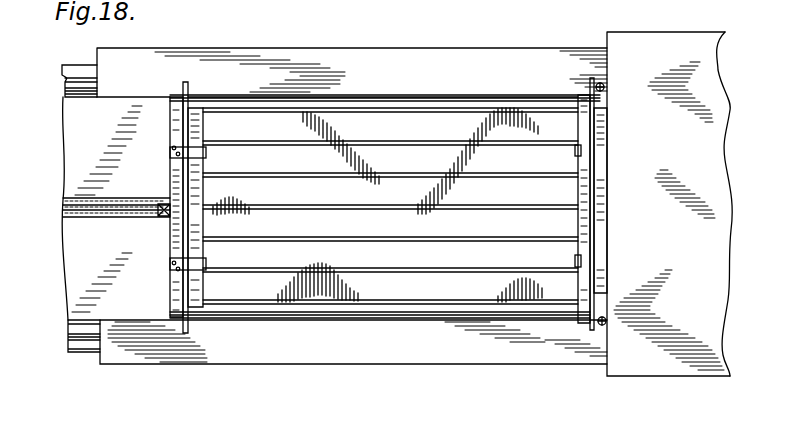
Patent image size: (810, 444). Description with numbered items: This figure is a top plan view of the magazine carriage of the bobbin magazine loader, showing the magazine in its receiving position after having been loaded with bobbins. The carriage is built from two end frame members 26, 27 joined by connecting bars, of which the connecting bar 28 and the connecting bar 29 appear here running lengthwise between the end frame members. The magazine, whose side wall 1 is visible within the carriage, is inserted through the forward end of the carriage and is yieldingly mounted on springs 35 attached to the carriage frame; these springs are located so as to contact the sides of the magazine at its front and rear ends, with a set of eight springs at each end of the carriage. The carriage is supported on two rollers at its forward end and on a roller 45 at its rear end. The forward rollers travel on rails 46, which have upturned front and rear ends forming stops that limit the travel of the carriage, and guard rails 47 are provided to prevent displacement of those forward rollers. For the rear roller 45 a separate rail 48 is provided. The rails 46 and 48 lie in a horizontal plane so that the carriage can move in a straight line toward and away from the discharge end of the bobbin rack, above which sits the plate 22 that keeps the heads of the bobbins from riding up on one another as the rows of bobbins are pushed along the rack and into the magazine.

The side wall 1 is at (306, 225).
The plate 22 is at (700, 43).
The end frame member 26 is at (585, 125).
The end frame member 27 is at (177, 130).
The connecting bar 28 is at (437, 98).
The connecting bar 29 is at (420, 315).
The spring 35 is at (207, 152).
The roller 45 is at (163, 213).
The rail 46 is at (73, 78).
The guard rail 47 is at (140, 85).
The rail 48 is at (80, 205).